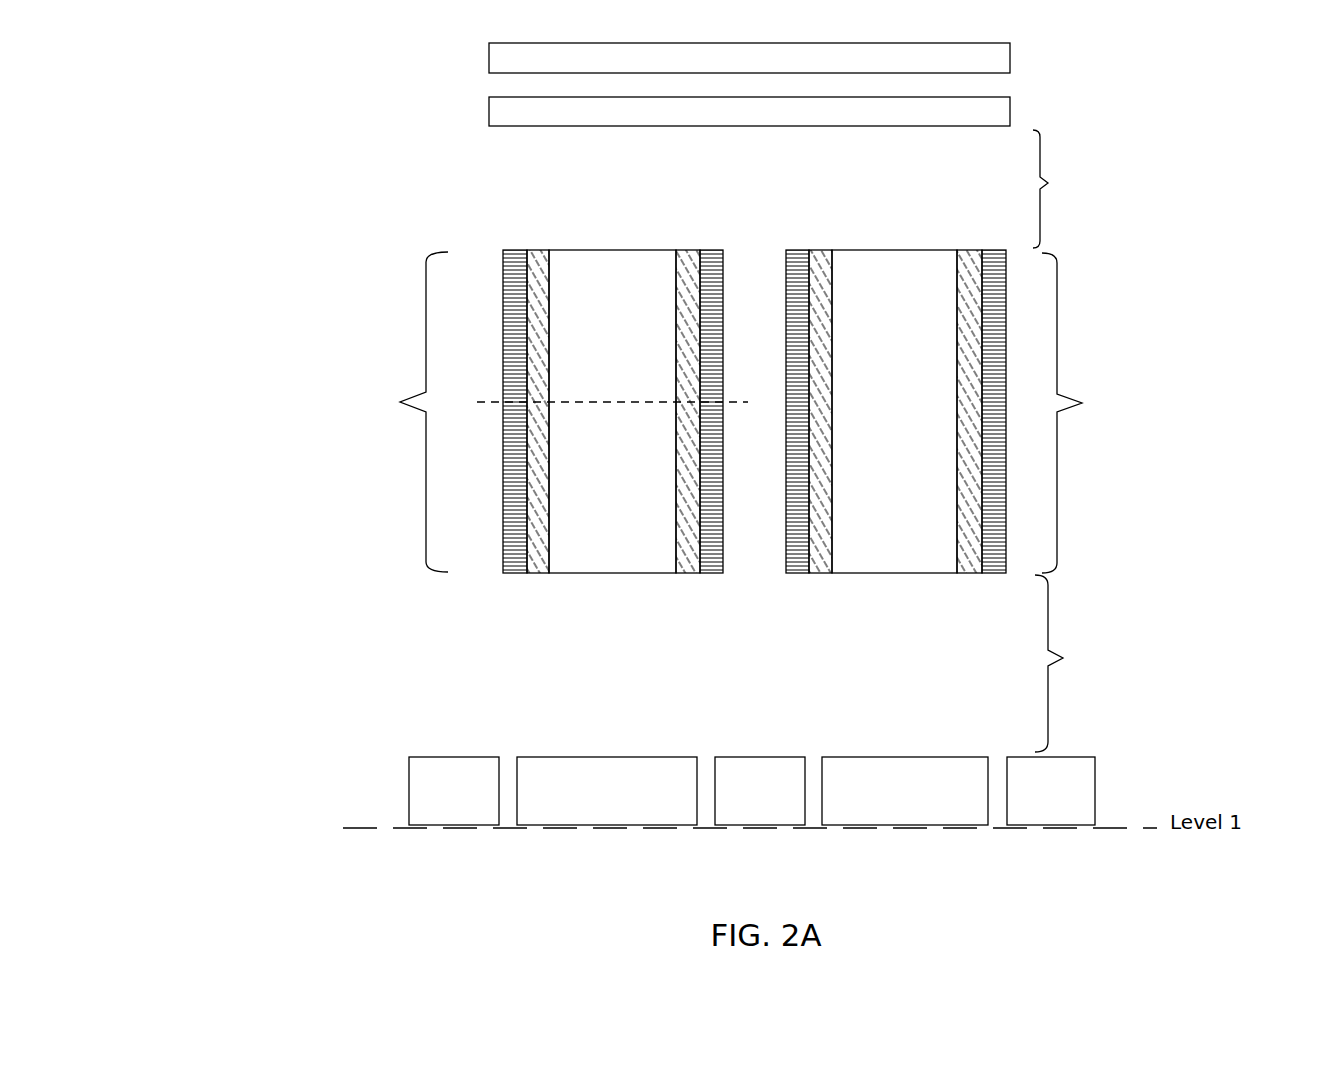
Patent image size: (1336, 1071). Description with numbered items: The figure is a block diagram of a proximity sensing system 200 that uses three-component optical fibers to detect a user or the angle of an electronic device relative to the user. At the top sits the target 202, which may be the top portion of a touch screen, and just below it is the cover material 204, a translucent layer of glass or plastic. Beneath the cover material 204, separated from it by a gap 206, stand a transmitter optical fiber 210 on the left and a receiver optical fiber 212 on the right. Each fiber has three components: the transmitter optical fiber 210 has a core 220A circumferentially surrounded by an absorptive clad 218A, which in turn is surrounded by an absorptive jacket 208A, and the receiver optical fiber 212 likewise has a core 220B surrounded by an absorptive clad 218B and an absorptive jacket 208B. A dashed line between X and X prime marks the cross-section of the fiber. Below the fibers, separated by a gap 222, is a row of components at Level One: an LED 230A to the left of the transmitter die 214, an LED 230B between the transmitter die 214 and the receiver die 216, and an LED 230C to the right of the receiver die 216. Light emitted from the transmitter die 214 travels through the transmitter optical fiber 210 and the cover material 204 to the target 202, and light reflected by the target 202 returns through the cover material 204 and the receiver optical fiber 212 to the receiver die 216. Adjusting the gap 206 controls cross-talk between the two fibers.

The proximity sensing system 200 is at (1248, 85).
The target 202 is at (1011, 57).
The cover material 204 is at (1011, 110).
The gap 206 is at (1091, 189).
The absorptive jacket 208A is at (513, 250).
The absorptive jacket 208B is at (998, 250).
The transmitter optical fiber 210 is at (458, 410).
The receiver optical fiber 212 is at (1053, 410).
The transmitter die 214 is at (588, 814).
The receiver die 216 is at (925, 814).
The absorptive clad 218A is at (690, 575).
The absorptive clad 218B is at (975, 575).
The core 220A is at (638, 469).
The core 220B is at (921, 469).
The gap 222 is at (1092, 663).
The LED 230A is at (484, 814).
The LED 230B is at (787, 814).
The LED 230C is at (1078, 814).